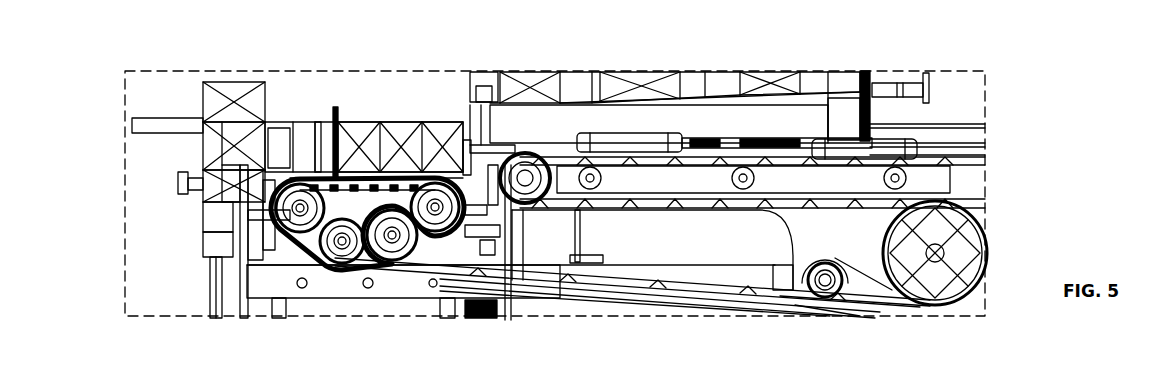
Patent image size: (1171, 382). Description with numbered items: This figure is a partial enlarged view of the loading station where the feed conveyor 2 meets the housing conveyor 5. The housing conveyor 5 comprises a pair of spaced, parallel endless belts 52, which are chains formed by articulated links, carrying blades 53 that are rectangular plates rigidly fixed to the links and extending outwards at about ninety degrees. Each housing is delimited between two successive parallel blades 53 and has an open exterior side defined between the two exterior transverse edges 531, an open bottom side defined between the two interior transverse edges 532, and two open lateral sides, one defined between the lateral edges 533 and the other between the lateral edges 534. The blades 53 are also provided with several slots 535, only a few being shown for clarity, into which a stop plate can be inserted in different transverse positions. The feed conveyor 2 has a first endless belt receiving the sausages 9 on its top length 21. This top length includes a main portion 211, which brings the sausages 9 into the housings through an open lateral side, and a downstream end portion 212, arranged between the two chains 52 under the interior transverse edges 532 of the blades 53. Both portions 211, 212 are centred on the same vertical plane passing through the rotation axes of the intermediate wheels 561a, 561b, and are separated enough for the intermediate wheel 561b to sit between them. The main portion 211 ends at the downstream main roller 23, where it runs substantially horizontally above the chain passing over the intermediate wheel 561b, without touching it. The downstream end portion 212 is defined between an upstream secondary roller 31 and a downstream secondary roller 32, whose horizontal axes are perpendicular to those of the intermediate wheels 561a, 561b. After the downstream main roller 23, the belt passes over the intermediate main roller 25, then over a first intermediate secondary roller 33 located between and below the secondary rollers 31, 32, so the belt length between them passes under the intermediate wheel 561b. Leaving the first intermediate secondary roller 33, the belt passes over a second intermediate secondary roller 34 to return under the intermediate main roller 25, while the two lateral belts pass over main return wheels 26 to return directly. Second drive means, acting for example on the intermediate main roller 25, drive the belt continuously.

The feed conveyor 2 is at (962, 118).
The housing conveyor 5 is at (208, 306).
The sausages 9 is at (663, 142).
The top length 21 is at (785, 160).
The main portion 211 is at (707, 160).
The downstream end portion 212 is at (397, 187).
The downstream main roller 23 is at (524, 178).
The intermediate main roller 25 is at (932, 287).
The main return wheels 26 is at (833, 297).
The upstream secondary roller 31 is at (434, 232).
The downstream secondary roller 32 is at (300, 235).
The first intermediate secondary roller 33 is at (390, 245).
The second intermediate secondary roller 34 is at (335, 250).
The endless belts 52 is at (230, 190).
The blades 53 is at (312, 128).
The exterior transverse edges 531 is at (430, 127).
The interior transverse edges 532 is at (370, 173).
The lateral edges 533 is at (458, 157).
The lateral edges 534 is at (280, 138).
The slots 535 is at (314, 128).
The intermediate wheel 561a is at (230, 240).
The intermediate wheel 561b is at (500, 238).